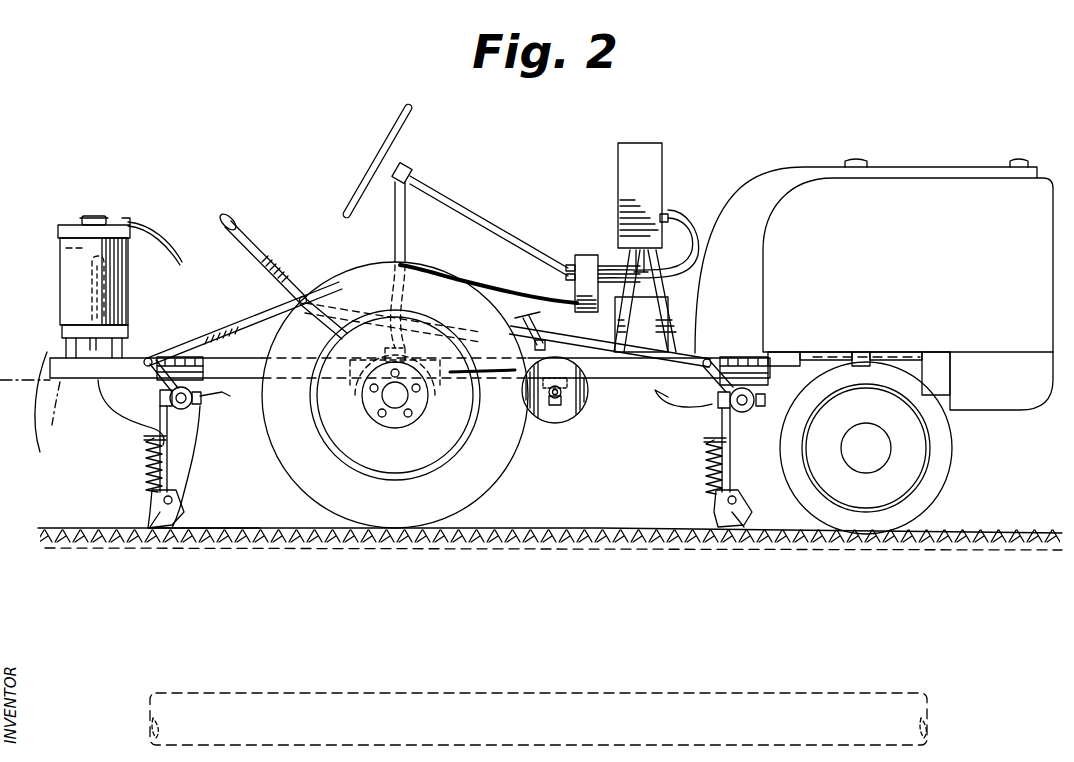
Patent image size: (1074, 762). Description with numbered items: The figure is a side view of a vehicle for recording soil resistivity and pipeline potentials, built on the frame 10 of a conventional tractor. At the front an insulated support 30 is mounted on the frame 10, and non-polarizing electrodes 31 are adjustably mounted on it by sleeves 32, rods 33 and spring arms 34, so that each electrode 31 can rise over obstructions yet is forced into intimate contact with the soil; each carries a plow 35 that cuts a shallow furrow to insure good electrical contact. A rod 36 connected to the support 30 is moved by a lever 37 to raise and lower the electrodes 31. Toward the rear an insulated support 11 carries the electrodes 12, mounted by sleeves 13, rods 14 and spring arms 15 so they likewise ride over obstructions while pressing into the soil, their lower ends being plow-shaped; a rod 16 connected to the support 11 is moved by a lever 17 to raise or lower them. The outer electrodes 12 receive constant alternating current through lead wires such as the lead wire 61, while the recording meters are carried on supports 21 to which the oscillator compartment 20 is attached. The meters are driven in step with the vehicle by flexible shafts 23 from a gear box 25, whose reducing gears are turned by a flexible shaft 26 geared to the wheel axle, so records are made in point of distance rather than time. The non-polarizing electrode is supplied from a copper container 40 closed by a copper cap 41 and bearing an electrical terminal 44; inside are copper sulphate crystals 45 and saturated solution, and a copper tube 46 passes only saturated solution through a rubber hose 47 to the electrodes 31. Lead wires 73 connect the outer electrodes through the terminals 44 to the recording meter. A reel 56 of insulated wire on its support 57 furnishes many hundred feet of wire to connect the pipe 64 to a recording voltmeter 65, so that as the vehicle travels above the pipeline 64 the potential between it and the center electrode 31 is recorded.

The frame 10 is at (641, 392).
The insulated support 11 is at (748, 408).
The electrodes 12 is at (763, 553).
The sleeves 13 is at (740, 414).
The rods 14 is at (728, 455).
The spring arms 15 is at (712, 512).
The rod 16 is at (630, 360).
The lever 17 is at (262, 242).
The oscillator compartment 20 is at (668, 298).
The supports 21 is at (668, 324).
The flexible shafts 23 is at (698, 270).
The gear box 25 is at (589, 244).
The flexible shaft 26 is at (502, 290).
The insulated support 30 is at (200, 420).
The non-polarizing electrodes 31 is at (145, 518).
The sleeves 32 is at (185, 430).
The rods 33 is at (150, 430).
The spring arms 34 is at (145, 496).
The plow 35 is at (215, 522).
The rod 36 is at (226, 332).
The lever 37 is at (285, 266).
The copper container 40 is at (70, 252).
The copper cap 41 is at (92, 214).
The electrical terminal 44 is at (130, 220).
The copper sulphate crystals 45 is at (80, 292).
The copper tube 46 is at (117, 287).
The rubber hose 47 is at (110, 420).
The reel 56 is at (572, 420).
The support 57 is at (545, 410).
The lead wire 61 is at (665, 400).
The pipe 64 is at (722, 693).
The recording voltmeter 65 is at (676, 164).
The lead wires 73 is at (224, 393).